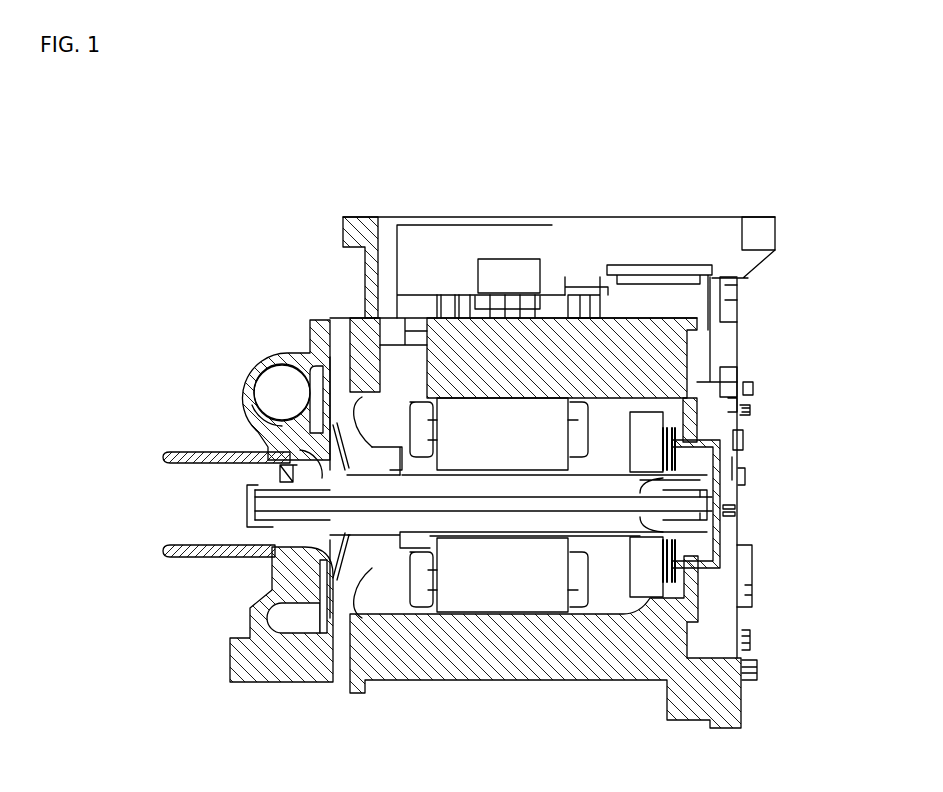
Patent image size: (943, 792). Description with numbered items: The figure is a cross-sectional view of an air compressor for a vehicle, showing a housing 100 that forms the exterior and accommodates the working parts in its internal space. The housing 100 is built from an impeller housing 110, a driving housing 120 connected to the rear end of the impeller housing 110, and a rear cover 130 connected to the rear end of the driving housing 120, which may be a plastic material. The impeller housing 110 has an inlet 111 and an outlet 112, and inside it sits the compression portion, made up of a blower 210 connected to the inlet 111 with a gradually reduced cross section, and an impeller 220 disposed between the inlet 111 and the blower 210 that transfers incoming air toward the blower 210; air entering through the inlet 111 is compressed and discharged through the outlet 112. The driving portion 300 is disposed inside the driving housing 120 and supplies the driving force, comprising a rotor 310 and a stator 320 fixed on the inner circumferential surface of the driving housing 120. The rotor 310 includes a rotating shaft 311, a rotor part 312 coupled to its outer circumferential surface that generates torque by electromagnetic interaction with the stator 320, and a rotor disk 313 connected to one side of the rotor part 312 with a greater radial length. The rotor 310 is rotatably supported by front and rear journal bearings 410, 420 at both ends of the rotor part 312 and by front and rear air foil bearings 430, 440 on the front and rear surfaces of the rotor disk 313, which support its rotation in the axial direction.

The housing 100 is at (329, 313).
The impeller housing 110 is at (280, 353).
The inlet 111 is at (178, 499).
The outlet 112 is at (283, 388).
The driving housing 120 is at (352, 217).
The rear cover 130 is at (724, 554).
The blower 210 is at (255, 412).
The impeller 220 is at (248, 487).
The driving portion 300 is at (660, 132).
The rotor 310 is at (672, 177).
The rotating shaft 311 is at (597, 500).
The rotor part 312 is at (557, 488).
The rotor disk 313 is at (640, 445).
The stator 320 is at (518, 433).
The front journal bearing 410 is at (388, 566).
The rear journal bearing 420 is at (722, 526).
The front air foil bearing 430 is at (717, 455).
The rear air foil bearing 440 is at (737, 451).